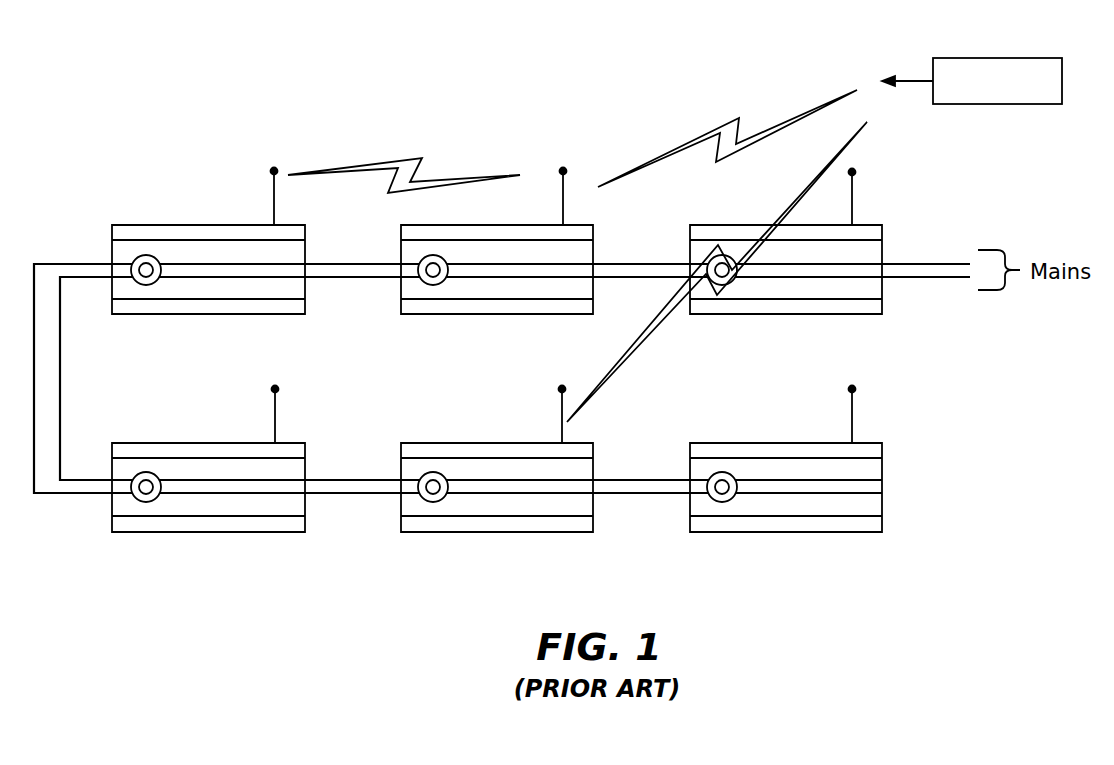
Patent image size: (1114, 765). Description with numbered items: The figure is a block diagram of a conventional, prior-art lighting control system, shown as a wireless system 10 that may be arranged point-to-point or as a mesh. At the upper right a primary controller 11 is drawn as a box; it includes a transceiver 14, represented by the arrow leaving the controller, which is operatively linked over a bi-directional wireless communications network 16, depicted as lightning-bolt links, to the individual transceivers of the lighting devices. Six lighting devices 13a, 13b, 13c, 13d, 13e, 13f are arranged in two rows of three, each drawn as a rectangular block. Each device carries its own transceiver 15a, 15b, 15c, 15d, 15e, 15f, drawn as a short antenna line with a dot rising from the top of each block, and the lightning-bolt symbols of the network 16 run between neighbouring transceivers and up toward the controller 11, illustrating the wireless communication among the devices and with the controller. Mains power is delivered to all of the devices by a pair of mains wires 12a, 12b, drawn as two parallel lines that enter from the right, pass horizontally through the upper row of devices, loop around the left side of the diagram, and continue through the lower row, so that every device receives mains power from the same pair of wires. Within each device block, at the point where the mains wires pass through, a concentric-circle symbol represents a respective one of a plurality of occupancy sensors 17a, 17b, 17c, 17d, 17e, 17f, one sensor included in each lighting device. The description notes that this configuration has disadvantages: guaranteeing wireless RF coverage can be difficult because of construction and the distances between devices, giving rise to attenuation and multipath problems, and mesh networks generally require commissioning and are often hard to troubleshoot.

The wireless system 10 is at (1012, 492).
The primary controller 11 is at (997, 58).
The mains wire 12a is at (905, 263).
The mains wire 12b is at (905, 278).
The lighting device 13a is at (738, 225).
The lighting device 13b is at (510, 225).
The lighting device 13c is at (208, 225).
The lighting device 13d is at (187, 443).
The lighting device 13e is at (475, 443).
The lighting device 13f is at (765, 443).
The transceiver 14 is at (907, 80).
The transceiver 15a is at (855, 172).
The transceiver 15b is at (560, 171).
The transceiver 15c is at (271, 171).
The transceiver 15d is at (272, 389).
The transceiver 15e is at (559, 389).
The transceiver 15f is at (849, 389).
The bi-directional wireless communications network 16 is at (735, 118).
The occupancy sensor 17a is at (736, 288).
The occupancy sensor 17b is at (433, 285).
The occupancy sensor 17c is at (146, 285).
The occupancy sensor 17d is at (146, 502).
The occupancy sensor 17e is at (433, 502).
The occupancy sensor 17f is at (722, 502).